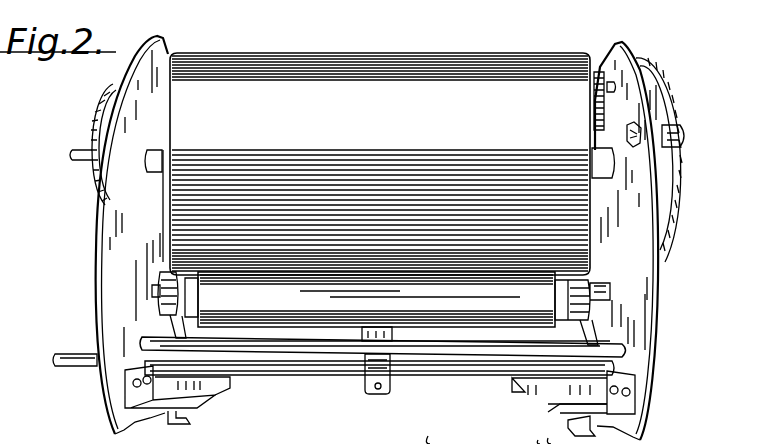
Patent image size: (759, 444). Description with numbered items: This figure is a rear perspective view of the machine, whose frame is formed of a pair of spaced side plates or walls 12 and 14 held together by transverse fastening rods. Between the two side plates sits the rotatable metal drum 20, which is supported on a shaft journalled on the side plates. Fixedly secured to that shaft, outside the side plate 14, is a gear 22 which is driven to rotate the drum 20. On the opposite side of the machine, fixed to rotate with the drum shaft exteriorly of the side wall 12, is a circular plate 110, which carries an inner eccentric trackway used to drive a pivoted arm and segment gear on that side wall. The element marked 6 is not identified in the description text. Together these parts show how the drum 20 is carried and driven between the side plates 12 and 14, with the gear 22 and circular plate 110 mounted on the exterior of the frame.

The roller 6 is at (585, 284).
The side plate 12 is at (660, 284).
The side plate 14 is at (149, 37).
The rotatable metal drum 20 is at (538, 73).
The gear 22 is at (95, 106).
The circular plate 110 is at (672, 74).